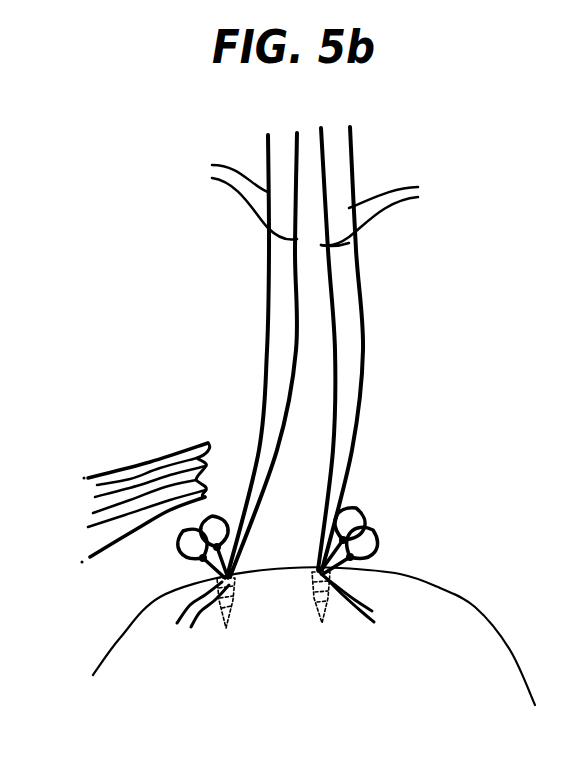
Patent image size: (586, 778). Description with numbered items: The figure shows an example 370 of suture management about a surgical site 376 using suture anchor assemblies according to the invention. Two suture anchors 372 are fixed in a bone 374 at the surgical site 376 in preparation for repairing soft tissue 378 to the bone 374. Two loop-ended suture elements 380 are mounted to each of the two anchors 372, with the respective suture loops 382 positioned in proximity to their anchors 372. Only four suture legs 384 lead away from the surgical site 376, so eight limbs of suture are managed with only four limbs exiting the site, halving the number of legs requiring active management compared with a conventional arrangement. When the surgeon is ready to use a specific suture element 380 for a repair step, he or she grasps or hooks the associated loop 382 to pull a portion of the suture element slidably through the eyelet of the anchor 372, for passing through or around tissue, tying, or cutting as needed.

The example of suture management 370 is at (181, 285).
The suture anchors 372 is at (310, 635).
The bone 374 is at (476, 617).
The surgical site 376 is at (358, 470).
The soft tissue 378 is at (163, 465).
The loop-ended suture elements 380 is at (190, 626).
The suture loops 382 is at (174, 540).
The suture legs 384 is at (315, 201).